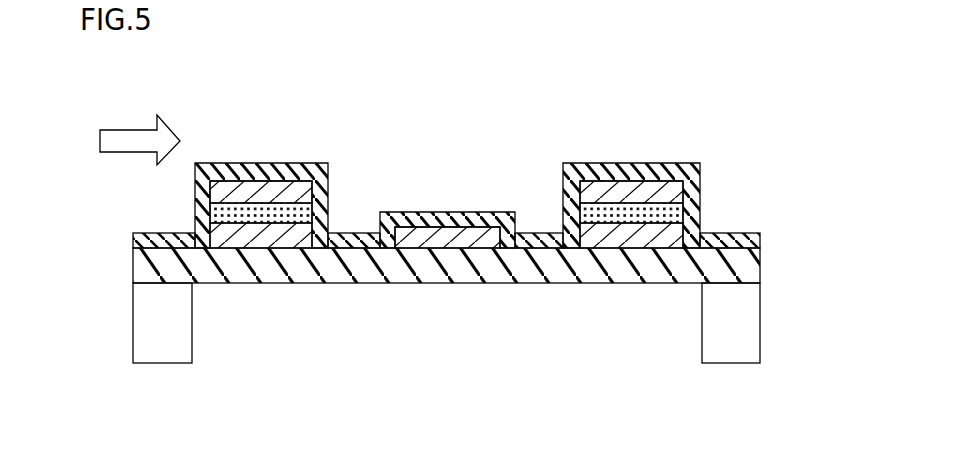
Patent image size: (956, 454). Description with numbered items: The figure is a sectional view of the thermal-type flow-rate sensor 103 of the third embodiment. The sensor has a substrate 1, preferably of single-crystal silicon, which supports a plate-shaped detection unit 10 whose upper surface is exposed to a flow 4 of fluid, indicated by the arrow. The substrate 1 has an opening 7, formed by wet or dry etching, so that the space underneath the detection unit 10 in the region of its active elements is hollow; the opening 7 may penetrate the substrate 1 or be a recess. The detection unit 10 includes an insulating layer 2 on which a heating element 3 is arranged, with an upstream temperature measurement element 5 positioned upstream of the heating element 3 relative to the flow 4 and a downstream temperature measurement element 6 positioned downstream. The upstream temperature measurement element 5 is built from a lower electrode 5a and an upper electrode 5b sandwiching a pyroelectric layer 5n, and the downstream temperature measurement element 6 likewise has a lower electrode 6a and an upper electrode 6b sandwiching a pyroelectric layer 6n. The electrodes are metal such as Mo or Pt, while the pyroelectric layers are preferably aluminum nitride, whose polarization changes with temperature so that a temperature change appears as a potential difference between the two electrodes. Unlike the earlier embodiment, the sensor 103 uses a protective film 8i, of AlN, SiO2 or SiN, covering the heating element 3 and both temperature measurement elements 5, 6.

The substrate 1 is at (733, 350).
The insulating layer 2 is at (362, 260).
The heating element 3 is at (447, 168).
The flow 4 is at (131, 127).
The upstream temperature measurement element 5 is at (291, 168).
The lower electrode 5a is at (307, 233).
The upper electrode 5b is at (297, 192).
The pyroelectric layer 5n is at (313, 211).
The downstream temperature measurement element 6 is at (602, 168).
The lower electrode 6a is at (583, 233).
The upper electrode 6b is at (597, 192).
The pyroelectric layer 6n is at (583, 213).
The opening 7 is at (291, 342).
The protective film 8i is at (448, 233).
The detection unit 10 is at (322, 90).
The thermal-type flow-rate sensor 103 is at (231, 78).